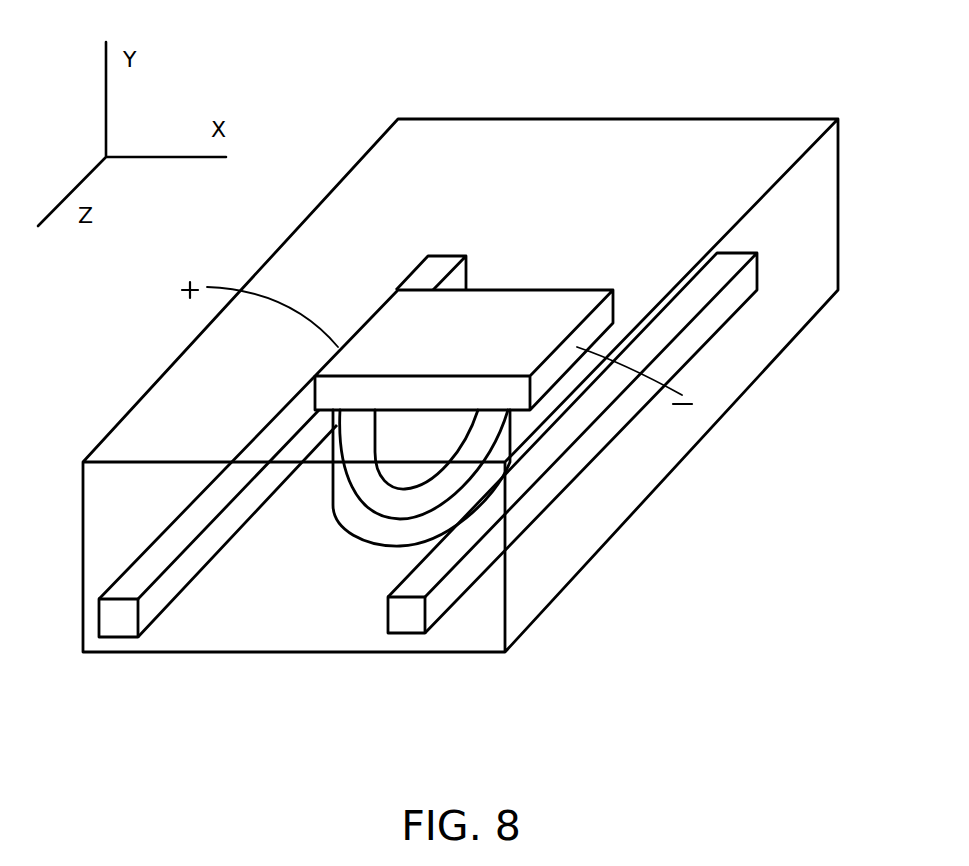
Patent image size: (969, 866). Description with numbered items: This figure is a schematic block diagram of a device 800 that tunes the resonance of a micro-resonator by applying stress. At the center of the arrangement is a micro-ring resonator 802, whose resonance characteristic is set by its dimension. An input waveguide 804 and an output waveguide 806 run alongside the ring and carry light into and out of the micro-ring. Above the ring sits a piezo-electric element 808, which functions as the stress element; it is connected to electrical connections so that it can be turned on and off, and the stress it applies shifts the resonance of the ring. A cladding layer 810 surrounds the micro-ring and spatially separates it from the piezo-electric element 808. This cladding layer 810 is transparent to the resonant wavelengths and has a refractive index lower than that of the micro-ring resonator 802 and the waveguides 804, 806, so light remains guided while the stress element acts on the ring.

The device 800 is at (509, 69).
The micro-ring resonator 802 is at (362, 522).
The input waveguide 804 is at (113, 617).
The output waveguide 806 is at (407, 617).
The piezo-electric element 808 is at (413, 318).
The cladding layer 810 is at (745, 160).